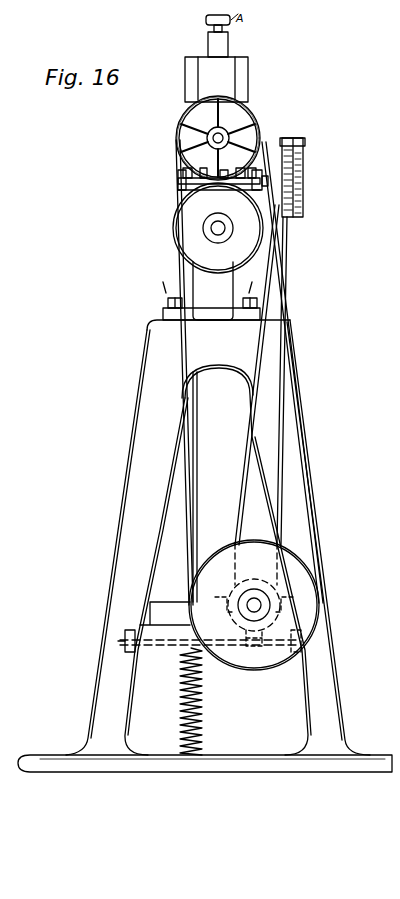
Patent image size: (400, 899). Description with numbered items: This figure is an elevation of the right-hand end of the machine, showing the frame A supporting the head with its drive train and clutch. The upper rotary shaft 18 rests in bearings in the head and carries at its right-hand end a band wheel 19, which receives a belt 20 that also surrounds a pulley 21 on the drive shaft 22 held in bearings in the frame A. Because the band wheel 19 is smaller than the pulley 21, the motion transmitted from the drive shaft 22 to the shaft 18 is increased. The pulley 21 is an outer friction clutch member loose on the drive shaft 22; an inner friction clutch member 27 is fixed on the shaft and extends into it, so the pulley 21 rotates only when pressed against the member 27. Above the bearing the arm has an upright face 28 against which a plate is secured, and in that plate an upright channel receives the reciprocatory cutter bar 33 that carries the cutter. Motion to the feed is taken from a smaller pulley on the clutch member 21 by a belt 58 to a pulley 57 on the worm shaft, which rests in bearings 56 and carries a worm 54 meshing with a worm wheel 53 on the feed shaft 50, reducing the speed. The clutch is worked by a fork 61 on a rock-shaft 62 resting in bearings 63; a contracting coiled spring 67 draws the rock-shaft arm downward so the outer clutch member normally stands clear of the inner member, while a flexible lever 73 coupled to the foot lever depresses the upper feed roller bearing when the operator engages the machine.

The frame A is at (205, 546).
The rotary shaft 18 is at (222, 136).
The band wheel 19 is at (177, 113).
The belt 20 is at (178, 182).
The pulley 21 is at (300, 553).
The drive shaft 22 is at (258, 605).
The inner friction clutch member 27 is at (300, 578).
The face 28 is at (250, 72).
The reciprocatory cutter bar 33 is at (210, 44).
The feed shaft 50 is at (213, 231).
The worm wheel 53 is at (200, 246).
The worm 54 is at (181, 176).
The bearings 56 is at (180, 191).
The pulley 57 is at (304, 174).
The belt 58 is at (290, 140).
The fork 61 is at (261, 621).
The rock-shaft 62 is at (175, 650).
The bearings 63 is at (147, 641).
The contracting coiled spring 67 is at (183, 700).
The lever 73 is at (202, 433).